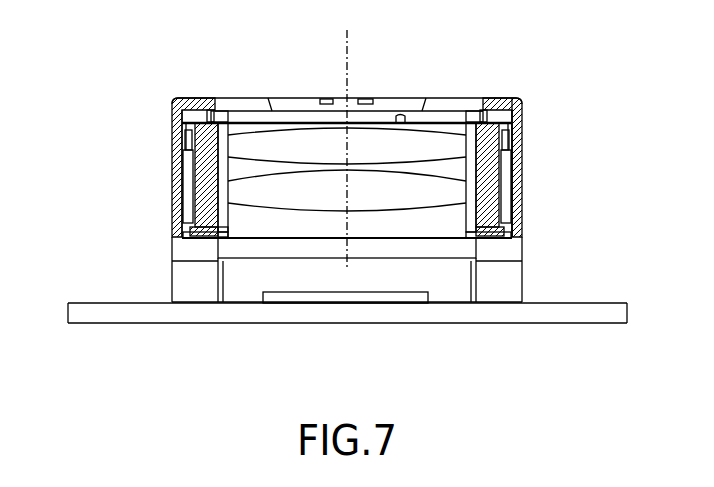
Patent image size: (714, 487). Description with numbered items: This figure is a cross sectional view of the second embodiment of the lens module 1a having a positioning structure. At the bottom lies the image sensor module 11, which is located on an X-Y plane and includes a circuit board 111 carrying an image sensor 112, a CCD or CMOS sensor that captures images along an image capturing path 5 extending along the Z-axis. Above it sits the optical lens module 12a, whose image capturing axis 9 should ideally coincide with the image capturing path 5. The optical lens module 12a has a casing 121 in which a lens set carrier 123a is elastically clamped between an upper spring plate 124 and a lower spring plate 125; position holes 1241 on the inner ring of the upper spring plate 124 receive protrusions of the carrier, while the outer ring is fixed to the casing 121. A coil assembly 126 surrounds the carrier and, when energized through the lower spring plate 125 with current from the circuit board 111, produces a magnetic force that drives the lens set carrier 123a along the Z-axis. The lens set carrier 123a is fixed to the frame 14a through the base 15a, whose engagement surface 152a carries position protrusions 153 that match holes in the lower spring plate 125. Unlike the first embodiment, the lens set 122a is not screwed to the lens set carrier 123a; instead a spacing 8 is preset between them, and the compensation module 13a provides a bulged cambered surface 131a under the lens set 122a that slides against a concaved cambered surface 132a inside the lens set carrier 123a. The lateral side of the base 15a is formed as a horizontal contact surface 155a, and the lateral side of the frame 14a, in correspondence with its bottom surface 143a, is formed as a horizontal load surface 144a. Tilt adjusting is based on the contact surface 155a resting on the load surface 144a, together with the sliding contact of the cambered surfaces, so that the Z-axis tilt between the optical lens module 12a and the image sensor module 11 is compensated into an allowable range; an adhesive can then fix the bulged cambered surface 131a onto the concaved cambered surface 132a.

The lens driving module 1a is at (153, 80).
The position holes 1241 is at (180, 98).
The spacing 8 is at (197, 133).
The optical lens module 12a is at (175, 163).
The position protrusions 153 is at (190, 232).
The compensation module 13a is at (65, 228).
The bulged cambered surface 131a is at (190, 237).
The concaved cambered surface 132a is at (213, 237).
The image capturing axis 9 is at (348, 68).
The lens set 122a is at (477, 102).
The casing 121 is at (522, 101).
The upper spring plate 124 is at (523, 108).
The lens set carrier 123a is at (523, 127).
The coil assembly 126 is at (515, 162).
The lower spring plate 125 is at (515, 214).
The engagement surface 152a is at (518, 232).
The base 15a is at (518, 246).
The contact surface 155a is at (518, 256).
The load surface 144a is at (508, 258).
The frame 14a is at (512, 293).
The bottom surface 143a is at (510, 302).
The image capturing path 5 is at (347, 268).
The image sensor 112 is at (413, 300).
The circuit board 111 is at (400, 319).
The image sensor module 11 is at (533, 340).